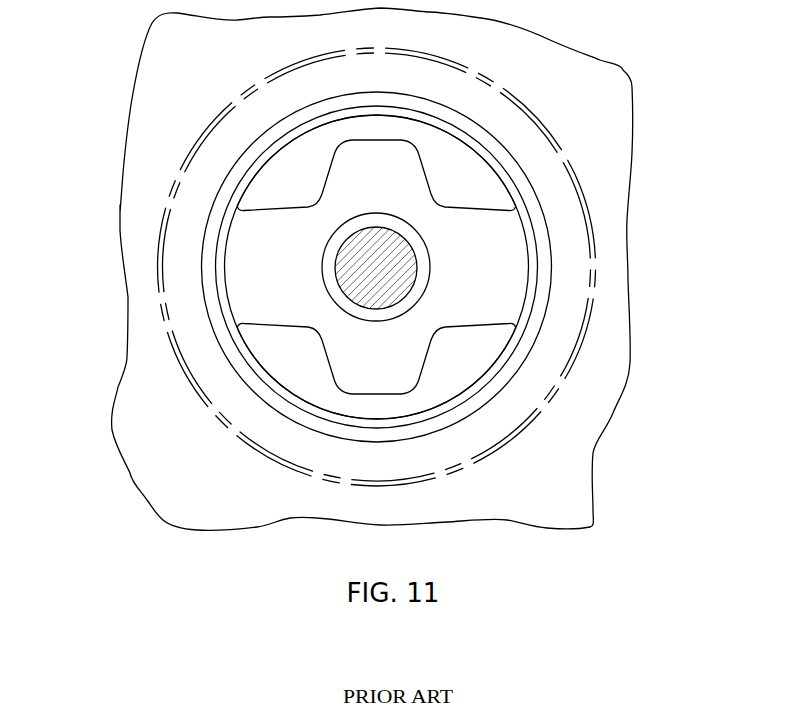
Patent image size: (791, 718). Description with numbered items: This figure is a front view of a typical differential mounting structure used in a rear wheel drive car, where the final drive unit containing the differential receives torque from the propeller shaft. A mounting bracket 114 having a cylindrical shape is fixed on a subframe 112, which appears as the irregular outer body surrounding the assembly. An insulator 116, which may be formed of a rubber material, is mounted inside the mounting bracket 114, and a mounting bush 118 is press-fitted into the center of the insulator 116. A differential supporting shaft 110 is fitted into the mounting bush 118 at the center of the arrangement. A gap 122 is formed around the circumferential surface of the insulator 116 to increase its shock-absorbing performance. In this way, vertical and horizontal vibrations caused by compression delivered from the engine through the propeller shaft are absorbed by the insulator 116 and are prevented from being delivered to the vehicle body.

The differential supporting shaft 110 is at (358, 258).
The subframe 112 is at (162, 90).
The mounting bracket 114 is at (508, 372).
The insulator 116 is at (490, 252).
The mounting bush 118 is at (328, 297).
The gap 122 is at (285, 352).